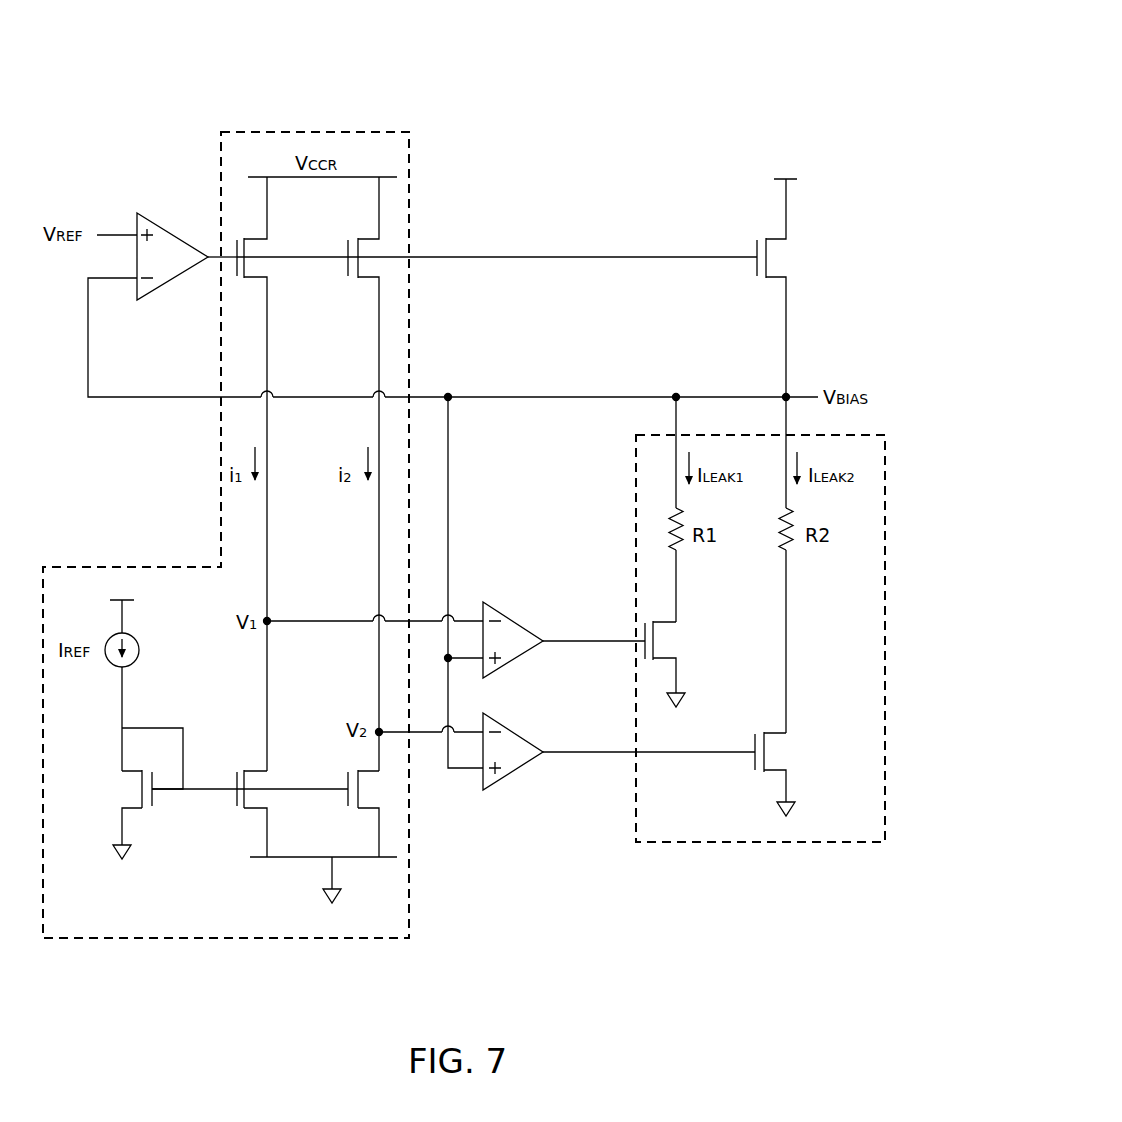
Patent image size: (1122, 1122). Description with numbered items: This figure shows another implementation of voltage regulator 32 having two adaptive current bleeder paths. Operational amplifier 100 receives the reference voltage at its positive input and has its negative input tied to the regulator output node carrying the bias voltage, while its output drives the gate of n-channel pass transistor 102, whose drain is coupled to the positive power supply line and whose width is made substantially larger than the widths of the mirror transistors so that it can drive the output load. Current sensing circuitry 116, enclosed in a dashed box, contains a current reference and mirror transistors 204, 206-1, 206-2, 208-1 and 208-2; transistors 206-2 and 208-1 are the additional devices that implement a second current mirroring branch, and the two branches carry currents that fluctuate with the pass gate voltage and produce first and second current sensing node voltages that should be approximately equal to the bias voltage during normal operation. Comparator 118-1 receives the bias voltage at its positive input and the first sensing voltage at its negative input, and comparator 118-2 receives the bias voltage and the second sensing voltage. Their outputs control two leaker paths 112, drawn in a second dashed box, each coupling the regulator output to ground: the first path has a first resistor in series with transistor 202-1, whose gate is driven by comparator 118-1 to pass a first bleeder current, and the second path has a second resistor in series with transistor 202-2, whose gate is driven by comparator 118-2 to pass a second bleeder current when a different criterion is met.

The voltage regulator circuitry 32 is at (727, 40).
The operational amplifier 100 is at (163, 225).
The n-channel pass transistor 102 is at (757, 285).
The switchable current leaker path 112 is at (700, 845).
The current sensing circuitry 116 is at (146, 940).
The comparator 118-1 is at (510, 613).
The comparator 118-2 is at (512, 775).
The transistor 202-1 is at (686, 646).
The transistor 202-2 is at (800, 750).
The reference transistor 204 is at (114, 789).
The mirror transistor 206-1 is at (245, 820).
The transistor 206-2 is at (388, 805).
The transistor 208-1 is at (233, 286).
The transistor 208-2 is at (387, 245).